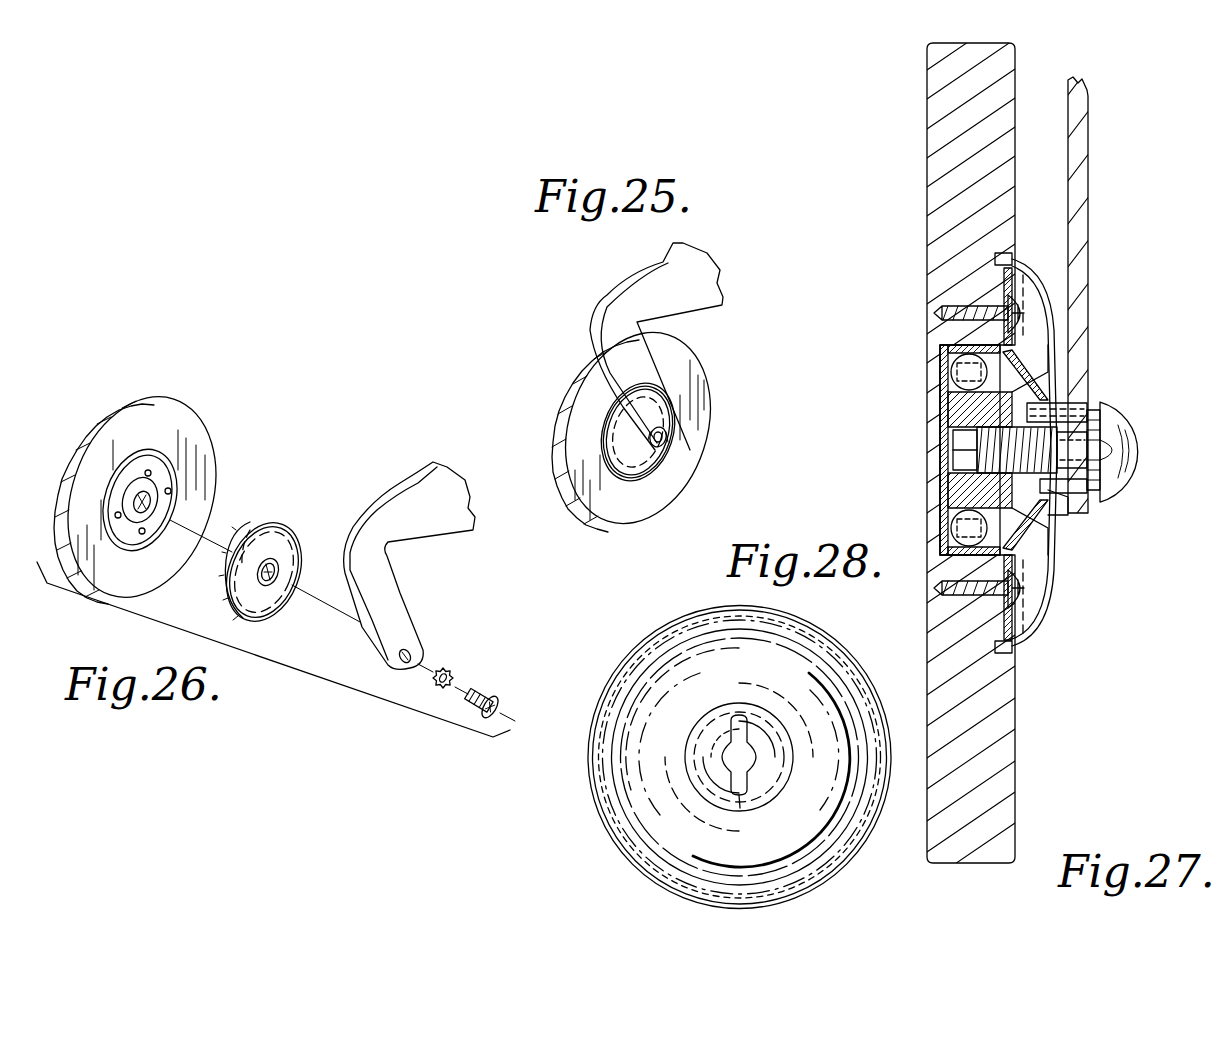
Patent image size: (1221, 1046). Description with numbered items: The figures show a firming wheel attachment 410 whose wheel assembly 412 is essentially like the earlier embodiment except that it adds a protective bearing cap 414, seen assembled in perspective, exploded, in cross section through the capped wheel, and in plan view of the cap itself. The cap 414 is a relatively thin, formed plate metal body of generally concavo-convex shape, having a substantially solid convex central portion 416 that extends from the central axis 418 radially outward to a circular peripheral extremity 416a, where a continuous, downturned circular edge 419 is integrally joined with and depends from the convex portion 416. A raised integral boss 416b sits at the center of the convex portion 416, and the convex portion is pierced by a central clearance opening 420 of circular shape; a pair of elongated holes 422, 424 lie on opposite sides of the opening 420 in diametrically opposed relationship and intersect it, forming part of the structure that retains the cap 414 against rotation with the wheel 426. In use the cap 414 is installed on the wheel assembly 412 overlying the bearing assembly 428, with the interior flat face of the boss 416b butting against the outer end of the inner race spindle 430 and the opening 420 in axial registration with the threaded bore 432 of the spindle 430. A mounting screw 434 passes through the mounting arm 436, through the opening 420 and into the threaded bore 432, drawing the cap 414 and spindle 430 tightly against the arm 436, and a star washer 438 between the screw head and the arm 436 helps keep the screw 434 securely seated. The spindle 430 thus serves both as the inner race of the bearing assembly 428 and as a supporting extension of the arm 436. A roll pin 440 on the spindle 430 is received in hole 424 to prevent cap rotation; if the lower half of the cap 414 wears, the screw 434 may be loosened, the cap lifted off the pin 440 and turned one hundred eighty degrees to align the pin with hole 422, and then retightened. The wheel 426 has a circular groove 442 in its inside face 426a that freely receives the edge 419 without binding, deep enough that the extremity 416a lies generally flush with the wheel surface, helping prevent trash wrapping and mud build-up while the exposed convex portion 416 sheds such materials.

In FIG. 26, the firming wheel attachment 410 is at (204, 409).
In FIG. 25, the firming wheel attachment 410 is at (580, 363).
In FIG. 27, the firming wheel attachment 410 is at (1098, 124).
In FIG. 26, the wheel assembly 412 is at (222, 464).
In FIG. 25, the wheel assembly 412 is at (737, 372).
In FIG. 27, the wheel assembly 412 is at (912, 191).
In FIG. 26, the protective bearing cap 414 is at (284, 525).
In FIG. 25, the protective bearing cap 414 is at (639, 491).
In FIG. 28, the protective bearing cap 414 is at (630, 634).
In FIG. 27, the protective bearing cap 414 is at (1064, 302).
In FIG. 26, the convex central portion 416 is at (240, 606).
In FIG. 25, the convex central portion 416 is at (655, 510).
In FIG. 28, the convex central portion 416 is at (630, 810).
In FIG. 27, the convex central portion 416 is at (1058, 325).
In FIG. 26, the circular peripheral extremity 416a is at (262, 605).
In FIG. 25, the circular peripheral extremity 416a is at (645, 470).
In FIG. 28, the circular peripheral extremity 416a is at (680, 612).
In FIG. 27, the circular peripheral extremity 416a is at (1032, 263).
In FIG. 28, the boss 416b is at (760, 735).
In FIG. 26, the central axis 418 is at (362, 630).
In FIG. 26, the downturned circular edge 419 is at (265, 548).
In FIG. 27, the downturned circular edge 419 is at (1012, 262).
In FIG. 26, the central clearance opening 420 is at (278, 568).
In FIG. 28, the central clearance opening 420 is at (730, 760).
In FIG. 28, the elongated hole 422 is at (756, 823).
In FIG. 27, the elongated hole 422 is at (1115, 473).
In FIG. 28, the elongated hole 424 is at (737, 720).
In FIG. 27, the elongated hole 424 is at (1112, 437).
In FIG. 26, the wheel 426 is at (143, 428).
In FIG. 25, the wheel 426 is at (677, 468).
In FIG. 27, the wheel 426 is at (1005, 75).
In FIG. 27, the inside face 426a is at (1015, 753).
In FIG. 26, the bearing assembly 428 is at (157, 503).
In FIG. 27, the bearing assembly 428 is at (955, 495).
In FIG. 27, the inner race spindle 430 is at (1062, 502).
In FIG. 27, the threaded bore 432 is at (952, 448).
In FIG. 26, the mounting screw 434 is at (497, 705).
In FIG. 25, the mounting screw 434 is at (668, 438).
In FIG. 27, the mounting screw 434 is at (1122, 433).
In FIG. 26, the mounting arm 436 is at (400, 502).
In FIG. 25, the mounting arm 436 is at (710, 304).
In FIG. 27, the mounting arm 436 is at (1080, 182).
In FIG. 26, the star washer 438 is at (452, 678).
In FIG. 27, the star washer 438 is at (1103, 480).
In FIG. 26, the roll pin 440 is at (145, 512).
In FIG. 27, the roll pin 440 is at (1070, 398).
In FIG. 26, the circular groove 442 is at (172, 456).
In FIG. 27, the circular groove 442 is at (1010, 256).